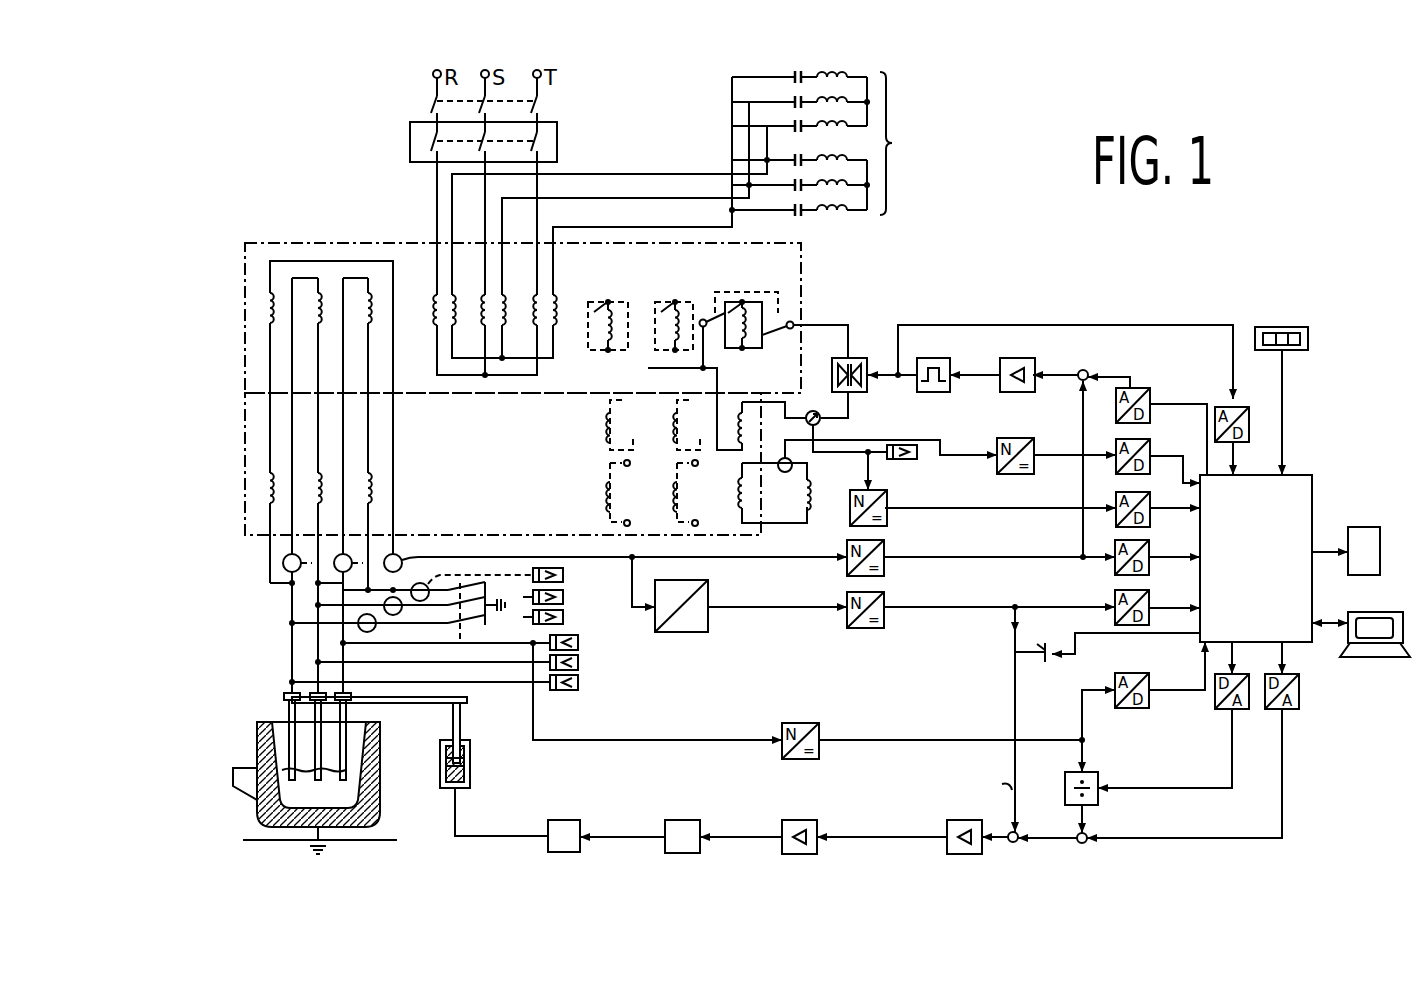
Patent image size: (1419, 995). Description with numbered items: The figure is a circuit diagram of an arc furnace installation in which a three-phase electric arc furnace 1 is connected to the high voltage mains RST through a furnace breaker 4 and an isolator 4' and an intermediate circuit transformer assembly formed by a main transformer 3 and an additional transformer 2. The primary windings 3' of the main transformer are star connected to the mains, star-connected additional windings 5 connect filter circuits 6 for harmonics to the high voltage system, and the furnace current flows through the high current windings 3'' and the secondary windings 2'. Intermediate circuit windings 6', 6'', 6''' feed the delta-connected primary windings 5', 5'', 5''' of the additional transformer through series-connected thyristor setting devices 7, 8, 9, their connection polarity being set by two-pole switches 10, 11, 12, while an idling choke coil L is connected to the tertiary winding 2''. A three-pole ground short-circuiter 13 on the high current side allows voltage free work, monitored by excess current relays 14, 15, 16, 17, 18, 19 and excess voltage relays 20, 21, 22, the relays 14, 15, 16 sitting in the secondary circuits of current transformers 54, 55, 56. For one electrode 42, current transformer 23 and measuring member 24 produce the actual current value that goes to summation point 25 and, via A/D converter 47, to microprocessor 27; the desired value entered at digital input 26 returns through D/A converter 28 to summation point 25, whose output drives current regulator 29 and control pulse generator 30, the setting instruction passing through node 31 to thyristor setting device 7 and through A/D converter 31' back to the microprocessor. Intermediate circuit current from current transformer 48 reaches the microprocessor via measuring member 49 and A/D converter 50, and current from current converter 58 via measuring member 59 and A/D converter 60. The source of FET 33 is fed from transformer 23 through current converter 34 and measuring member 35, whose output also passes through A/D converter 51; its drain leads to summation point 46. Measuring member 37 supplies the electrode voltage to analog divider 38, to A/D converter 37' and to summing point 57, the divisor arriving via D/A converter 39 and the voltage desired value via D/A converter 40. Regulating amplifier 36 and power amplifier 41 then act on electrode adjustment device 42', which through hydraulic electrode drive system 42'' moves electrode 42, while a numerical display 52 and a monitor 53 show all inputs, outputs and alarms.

The three-phase electric arc furnace 1 is at (268, 736).
The additional transformer 2 is at (319, 567).
The secondary windings of additional transformer 2' is at (331, 473).
The tertiary winding of additional transformer 2'' is at (690, 510).
The main transformer 3 is at (387, 407).
The primary windings 3' is at (472, 325).
The high current windings of main transformer 3'' is at (334, 325).
The furnace breaker 4 is at (463, 146).
The isolator 4' is at (460, 98).
The additional windings 5 is at (485, 330).
The primary winding of additional transformer 5' is at (729, 443).
The primary winding of additional transformer 5'' is at (671, 442).
The primary winding of additional transformer 5''' is at (604, 442).
The filter circuits 6 is at (677, 183).
The intermediate circuit winding 6' is at (746, 311).
The intermediate circuit winding 6'' is at (672, 312).
The intermediate circuit winding 6''' is at (605, 312).
The thyristor setting device 7 is at (873, 393).
The thyristor setting device 8 is at (873, 393).
The thyristor setting device 9 is at (862, 392).
The two-pole switch 10 is at (782, 375).
The two-pole switch 11 is at (782, 375).
The two-pole switch 12 is at (796, 321).
The three-pole ground short-circuiter 13 is at (483, 626).
The excess current relay 14 is at (563, 577).
The excess current relay 15 is at (563, 598).
The excess current relay 16 is at (563, 618).
The excess current relay 17 is at (925, 473).
The excess current relay 18 is at (925, 473).
The excess current relay 19 is at (890, 460).
The excess voltage relay 20 is at (578, 648).
The excess voltage relay 21 is at (578, 668).
The excess voltage relay 22 is at (578, 690).
The current transformer 23 is at (398, 556).
The current measuring member 24 is at (885, 566).
The summation point 25 is at (1086, 370).
The digital input 26 is at (1300, 372).
The microprocessor 27 is at (1299, 474).
The D/A converter 28 is at (1148, 386).
The current regulator 29 is at (1026, 358).
The control pulse generator 30 is at (942, 358).
The node 31 is at (1046, 362).
The A/D converter 31' is at (1247, 430).
The FET 33 is at (1045, 666).
The current converter 34 is at (680, 632).
The rectifying measuring member 35 is at (885, 616).
The regulating amplifier 36 is at (948, 812).
The measuring member 37 is at (807, 701).
The A/D converter 37' is at (1126, 691).
The analog divider 38 is at (1088, 772).
The D/A converter 39 is at (1226, 724).
The D/A converter 40 is at (1280, 718).
The power amplifier 41 is at (780, 820).
The electrode 42 is at (375, 736).
The electrode adjustment device 42' is at (640, 821).
The hydraulic electrode drive system 42'' is at (510, 777).
The summation point 46 is at (1002, 832).
The A/D converter 47 is at (1152, 554).
The intermediate circuit current transformer 48 is at (814, 421).
The rectifying measuring member 49 is at (887, 520).
The A/D converter 50 is at (1151, 508).
The A/D converter 51 is at (1152, 604).
The numerical display 52 is at (1350, 527).
The monitor 53 is at (1366, 610).
The current transformer 54 is at (426, 588).
The current transformer 55 is at (390, 616).
The current transformer 56 is at (364, 634).
The summing point 57 is at (1086, 844).
The current converter 58 is at (884, 473).
The measuring member 59 is at (1020, 473).
The A/D converter 60 is at (1148, 454).